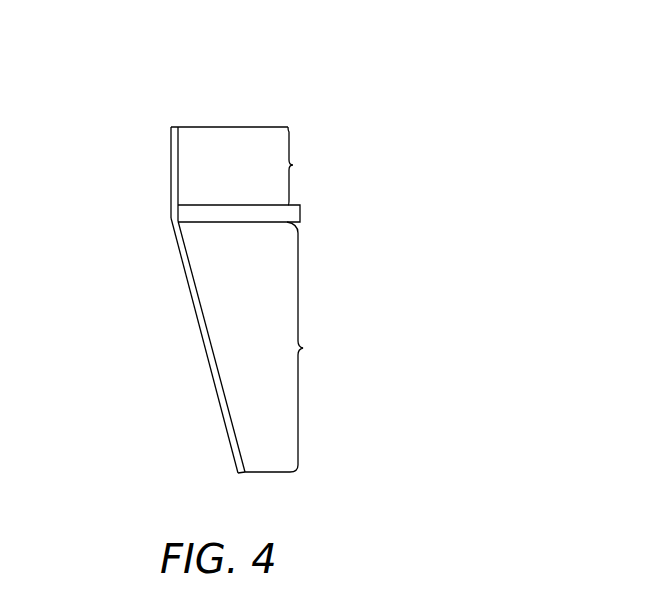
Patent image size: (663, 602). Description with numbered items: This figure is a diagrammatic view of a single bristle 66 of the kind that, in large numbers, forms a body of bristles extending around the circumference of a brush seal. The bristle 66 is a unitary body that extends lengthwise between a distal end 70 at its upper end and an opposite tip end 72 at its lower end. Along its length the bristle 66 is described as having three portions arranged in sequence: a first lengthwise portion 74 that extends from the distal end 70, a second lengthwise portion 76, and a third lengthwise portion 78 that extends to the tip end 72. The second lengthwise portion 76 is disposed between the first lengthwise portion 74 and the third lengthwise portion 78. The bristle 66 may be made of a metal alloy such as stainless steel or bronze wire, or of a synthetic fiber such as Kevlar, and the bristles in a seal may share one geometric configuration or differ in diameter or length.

The bristle 66 is at (177, 355).
The distal end 70 is at (173, 127).
The tip end 72 is at (242, 474).
The first lengthwise portion 74 is at (257, 166).
The second lengthwise portion 76 is at (261, 218).
The third lengthwise portion 78 is at (317, 347).